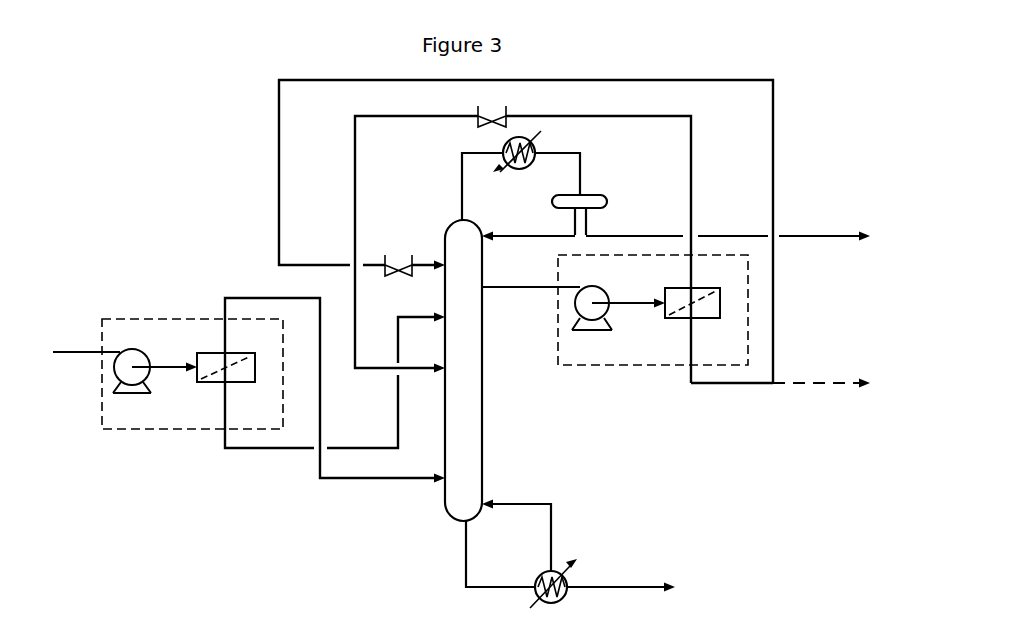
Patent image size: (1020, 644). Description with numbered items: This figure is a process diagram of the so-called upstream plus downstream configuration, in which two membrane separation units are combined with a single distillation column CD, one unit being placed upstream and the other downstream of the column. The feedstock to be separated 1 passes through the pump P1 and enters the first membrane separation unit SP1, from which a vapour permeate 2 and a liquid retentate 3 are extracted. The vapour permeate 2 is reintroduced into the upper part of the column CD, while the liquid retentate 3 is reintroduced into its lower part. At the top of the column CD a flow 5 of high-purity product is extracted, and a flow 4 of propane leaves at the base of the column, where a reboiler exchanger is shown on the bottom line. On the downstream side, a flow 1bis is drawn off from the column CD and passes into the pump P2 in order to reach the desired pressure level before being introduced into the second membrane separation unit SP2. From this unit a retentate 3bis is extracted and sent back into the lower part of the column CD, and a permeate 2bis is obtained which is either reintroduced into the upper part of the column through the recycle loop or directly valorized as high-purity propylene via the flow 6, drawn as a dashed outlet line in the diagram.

The feedstock to be separated 1 is at (85, 351).
The vapour permeate 2 is at (280, 450).
The liquid retentate 3 is at (258, 298).
The flow of propane 4 is at (613, 586).
The flow of high-purity polypropylene 5 is at (813, 235).
The flow of high-purity propylene 6 is at (813, 382).
The flow drawn off from the column 1bis is at (535, 288).
The permeate 2bis is at (279, 164).
The retentate 3bis is at (360, 198).
The distillation column CD is at (484, 393).
The pump P1 is at (132, 384).
The membrane separation unit SP1 is at (218, 384).
The pump P2 is at (592, 321).
The membrane separation unit SP2 is at (682, 320).